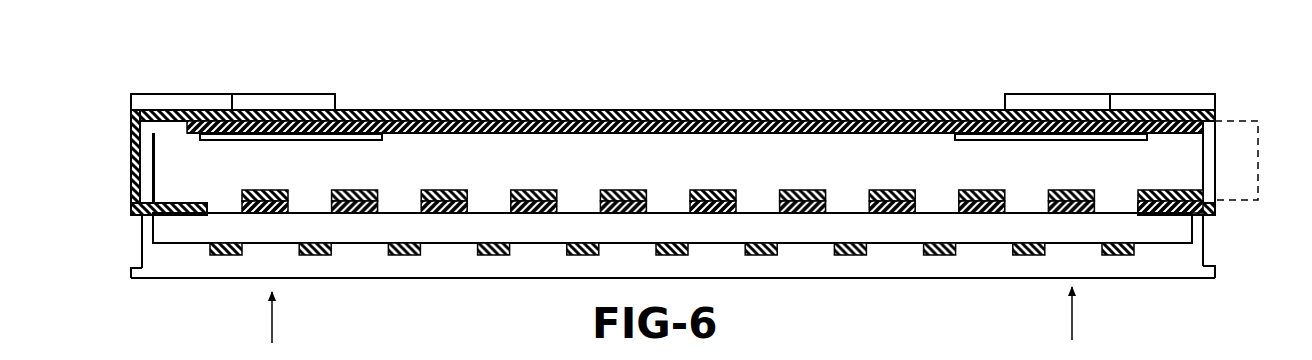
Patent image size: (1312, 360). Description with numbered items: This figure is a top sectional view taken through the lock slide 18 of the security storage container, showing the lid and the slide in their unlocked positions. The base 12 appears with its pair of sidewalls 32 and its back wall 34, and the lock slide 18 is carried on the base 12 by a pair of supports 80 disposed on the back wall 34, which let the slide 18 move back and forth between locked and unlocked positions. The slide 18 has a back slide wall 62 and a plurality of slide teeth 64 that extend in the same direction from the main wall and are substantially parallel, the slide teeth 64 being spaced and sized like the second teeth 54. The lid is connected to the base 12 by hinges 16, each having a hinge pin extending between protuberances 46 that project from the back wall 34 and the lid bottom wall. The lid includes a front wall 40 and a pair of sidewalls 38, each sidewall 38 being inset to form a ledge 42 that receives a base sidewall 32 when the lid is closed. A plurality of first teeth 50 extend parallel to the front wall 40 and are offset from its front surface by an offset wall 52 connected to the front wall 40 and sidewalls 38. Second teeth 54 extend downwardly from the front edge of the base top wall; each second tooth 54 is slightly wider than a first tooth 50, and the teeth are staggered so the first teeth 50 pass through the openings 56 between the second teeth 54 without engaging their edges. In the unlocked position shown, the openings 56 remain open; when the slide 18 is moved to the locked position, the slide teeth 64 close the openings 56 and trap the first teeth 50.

The base 12 is at (468, 106).
The hinge 16 is at (156, 90).
The lock slide 18 is at (674, 108).
The sidewall 32 is at (135, 143).
The back wall 34 is at (535, 110).
The sidewall 38 is at (142, 232).
The front wall 40 is at (187, 280).
The ledge 42 is at (133, 267).
The protuberance 46 is at (200, 97).
The first tooth 50 is at (226, 256).
The offset wall 52 is at (437, 246).
The second tooth 54 is at (362, 215).
The opening 56 is at (1036, 200).
The back slide wall 62 is at (642, 118).
The slide tooth 64 is at (462, 193).
The support 80 is at (258, 141).